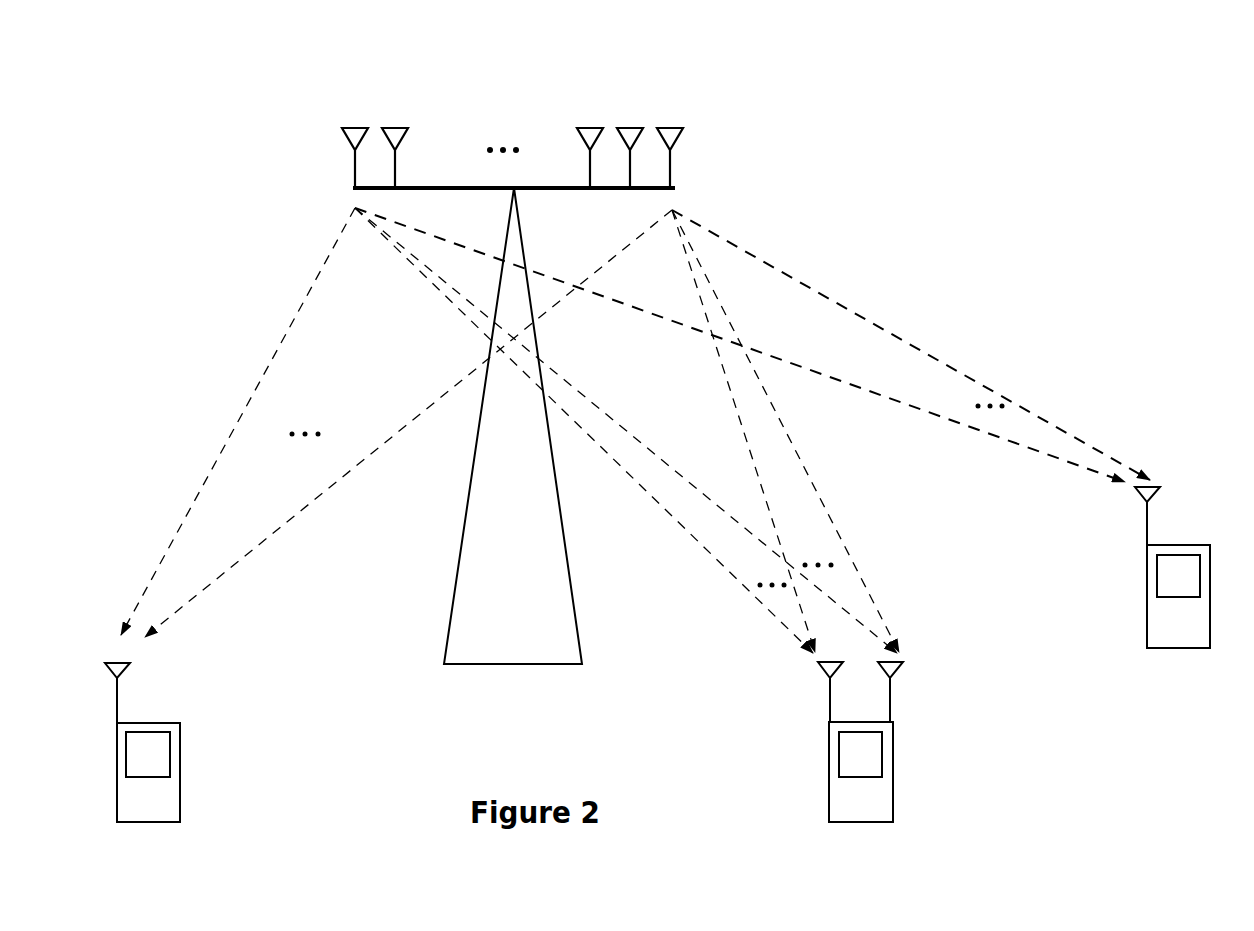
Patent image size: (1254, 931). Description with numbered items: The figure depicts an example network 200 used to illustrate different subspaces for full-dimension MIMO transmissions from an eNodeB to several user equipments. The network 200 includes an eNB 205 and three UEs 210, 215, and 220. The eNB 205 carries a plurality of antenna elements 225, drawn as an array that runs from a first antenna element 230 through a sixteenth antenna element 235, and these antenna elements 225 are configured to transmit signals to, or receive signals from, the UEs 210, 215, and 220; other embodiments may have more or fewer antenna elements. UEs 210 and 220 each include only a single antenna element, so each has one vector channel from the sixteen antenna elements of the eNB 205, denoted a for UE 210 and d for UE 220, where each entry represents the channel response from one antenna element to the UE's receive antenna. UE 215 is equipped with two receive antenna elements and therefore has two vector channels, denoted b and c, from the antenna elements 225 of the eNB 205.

The network 200 is at (975, 160).
The eNB 205 is at (506, 690).
The UE 210 is at (205, 790).
The UE 215 is at (813, 753).
The UE 220 is at (1116, 633).
The plurality of antenna elements 225 is at (497, 111).
The first antenna element 230 is at (340, 137).
The sixteenth antenna element 235 is at (683, 138).